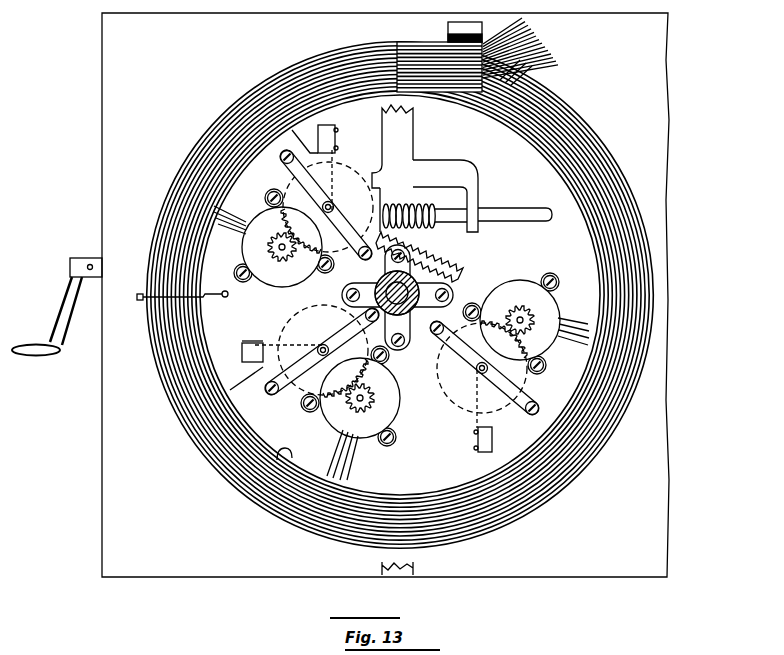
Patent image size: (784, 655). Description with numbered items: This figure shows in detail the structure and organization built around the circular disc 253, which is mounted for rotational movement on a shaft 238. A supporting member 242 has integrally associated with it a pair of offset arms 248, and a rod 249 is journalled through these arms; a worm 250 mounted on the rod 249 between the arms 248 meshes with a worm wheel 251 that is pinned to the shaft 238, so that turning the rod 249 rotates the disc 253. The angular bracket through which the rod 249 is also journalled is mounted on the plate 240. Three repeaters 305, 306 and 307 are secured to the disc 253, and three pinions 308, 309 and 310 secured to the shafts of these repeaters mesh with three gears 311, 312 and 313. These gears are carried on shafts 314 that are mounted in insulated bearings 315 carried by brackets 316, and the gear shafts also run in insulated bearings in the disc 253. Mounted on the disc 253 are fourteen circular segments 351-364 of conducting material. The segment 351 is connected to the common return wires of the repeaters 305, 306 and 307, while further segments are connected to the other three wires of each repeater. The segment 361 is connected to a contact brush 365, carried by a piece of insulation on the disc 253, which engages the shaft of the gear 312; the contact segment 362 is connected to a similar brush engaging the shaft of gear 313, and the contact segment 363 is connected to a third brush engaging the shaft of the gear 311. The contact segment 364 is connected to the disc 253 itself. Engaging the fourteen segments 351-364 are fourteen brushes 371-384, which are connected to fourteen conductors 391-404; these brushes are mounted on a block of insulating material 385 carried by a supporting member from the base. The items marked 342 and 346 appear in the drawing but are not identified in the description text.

The plate 240 is at (655, 145).
The supporting member 242 is at (408, 132).
The arms 248 is at (475, 185).
The rod 249 is at (500, 213).
The worm 250 is at (423, 200).
The worm wheel 251 is at (455, 265).
The circular disc 253 is at (443, 477).
The shaft 238 is at (385, 283).
The repeater 305 is at (284, 238).
The repeater 306 is at (350, 396).
The repeater 307 is at (511, 323).
The pinion 308 is at (268, 248).
The pinion 309 is at (380, 404).
The pinion 310 is at (532, 316).
The gear 311 is at (282, 186).
The gear 312 is at (311, 363).
The gear 313 is at (527, 372).
The shaft 314 is at (334, 208).
The insulated bearing 315 is at (490, 384).
The bracket 316 is at (446, 350).
The terminal 342 is at (450, 25).
The crank handle 346 is at (45, 357).
The segment 351 is at (282, 465).
The circular segments 351-364 is at (265, 102).
The segment 361 is at (240, 365).
The contact segment 362 is at (517, 445).
The contact segment 363 is at (314, 135).
The contact segment 364 is at (143, 292).
The contact brush 365 is at (336, 160).
The brushes 371-384 is at (405, 40).
The block of insulating material 385 is at (497, 22).
The conductors 391-404 is at (545, 50).